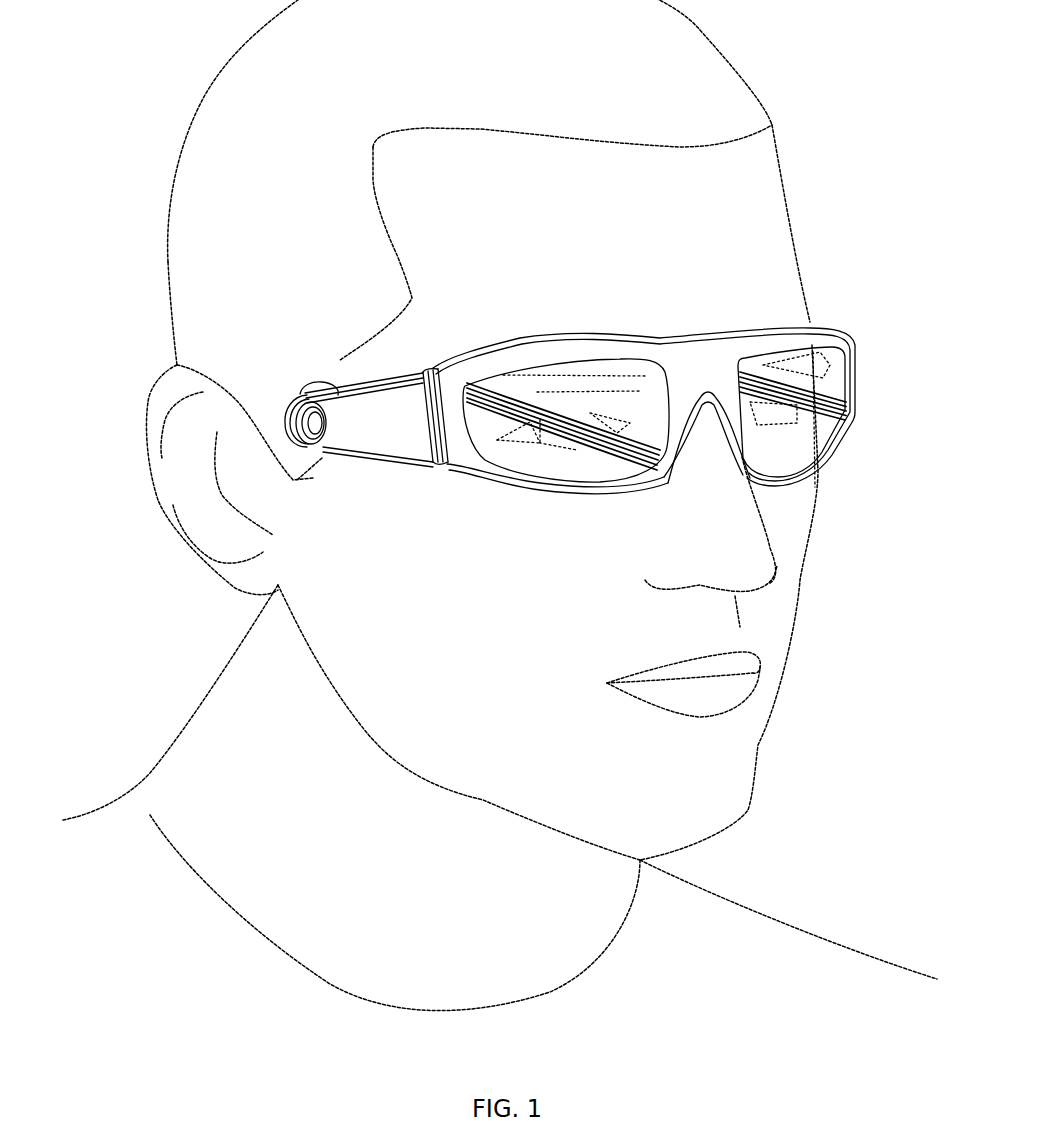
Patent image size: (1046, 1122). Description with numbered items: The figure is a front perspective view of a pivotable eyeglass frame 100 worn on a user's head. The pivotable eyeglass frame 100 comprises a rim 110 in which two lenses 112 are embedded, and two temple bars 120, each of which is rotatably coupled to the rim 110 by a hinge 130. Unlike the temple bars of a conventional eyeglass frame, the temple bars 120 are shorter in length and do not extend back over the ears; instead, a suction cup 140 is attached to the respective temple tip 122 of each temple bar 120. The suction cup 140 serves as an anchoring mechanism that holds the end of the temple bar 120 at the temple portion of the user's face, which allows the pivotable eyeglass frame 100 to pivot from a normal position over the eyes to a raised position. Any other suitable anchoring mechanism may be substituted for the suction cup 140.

The pivotable eyeglass frame 100 is at (570, 398).
The rim 110 is at (703, 370).
The lenses 112 is at (543, 460).
The temple bars 120 is at (367, 400).
The temple tip 122 is at (303, 447).
The hinge 130 is at (423, 356).
The suction cup 140 is at (305, 408).